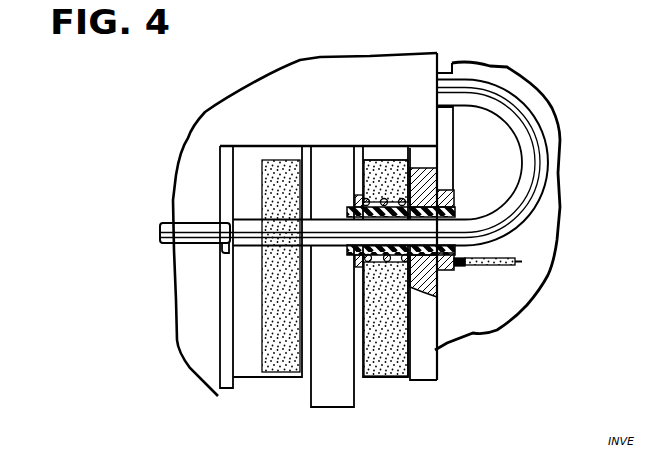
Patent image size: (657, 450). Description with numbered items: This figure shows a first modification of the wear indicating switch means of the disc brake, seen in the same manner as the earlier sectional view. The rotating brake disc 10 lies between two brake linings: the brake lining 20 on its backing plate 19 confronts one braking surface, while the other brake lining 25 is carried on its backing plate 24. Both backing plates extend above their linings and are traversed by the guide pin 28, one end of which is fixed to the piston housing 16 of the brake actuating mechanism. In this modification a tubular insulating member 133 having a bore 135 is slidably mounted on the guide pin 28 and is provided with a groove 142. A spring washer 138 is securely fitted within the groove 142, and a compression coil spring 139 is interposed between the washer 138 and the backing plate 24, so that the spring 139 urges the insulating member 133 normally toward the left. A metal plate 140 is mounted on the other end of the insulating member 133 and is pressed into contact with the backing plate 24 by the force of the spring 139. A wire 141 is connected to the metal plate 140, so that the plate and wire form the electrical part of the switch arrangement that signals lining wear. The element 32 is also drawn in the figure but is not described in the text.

The piston housing 16 is at (190, 310).
The guide pin 28 is at (523, 112).
The bore 135 is at (335, 215).
The backing plate 19 is at (243, 362).
The brake lining 20 is at (282, 362).
The disc 10 is at (333, 390).
The brake lining 25 is at (387, 372).
The backing plate 24 is at (423, 372).
The compression coil spring 139 is at (386, 175).
The tubular insulating member 133 is at (430, 173).
The metal plate 140 is at (455, 190).
The nut 32 is at (455, 276).
The wire 141 is at (513, 264).
The groove 142 is at (378, 203).
The spring washer 138 is at (358, 260).